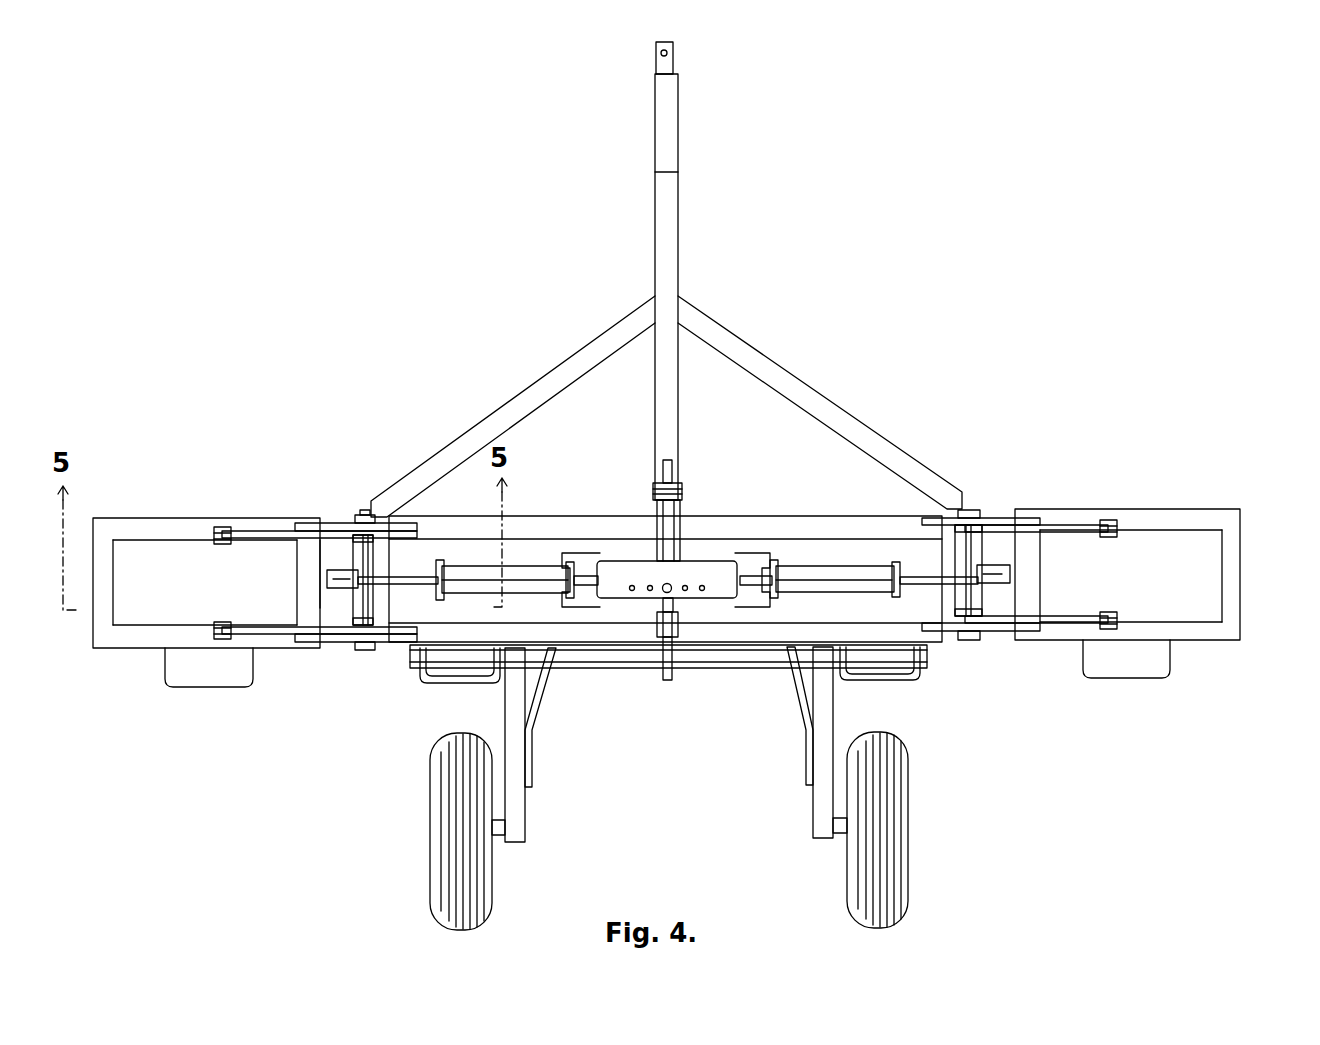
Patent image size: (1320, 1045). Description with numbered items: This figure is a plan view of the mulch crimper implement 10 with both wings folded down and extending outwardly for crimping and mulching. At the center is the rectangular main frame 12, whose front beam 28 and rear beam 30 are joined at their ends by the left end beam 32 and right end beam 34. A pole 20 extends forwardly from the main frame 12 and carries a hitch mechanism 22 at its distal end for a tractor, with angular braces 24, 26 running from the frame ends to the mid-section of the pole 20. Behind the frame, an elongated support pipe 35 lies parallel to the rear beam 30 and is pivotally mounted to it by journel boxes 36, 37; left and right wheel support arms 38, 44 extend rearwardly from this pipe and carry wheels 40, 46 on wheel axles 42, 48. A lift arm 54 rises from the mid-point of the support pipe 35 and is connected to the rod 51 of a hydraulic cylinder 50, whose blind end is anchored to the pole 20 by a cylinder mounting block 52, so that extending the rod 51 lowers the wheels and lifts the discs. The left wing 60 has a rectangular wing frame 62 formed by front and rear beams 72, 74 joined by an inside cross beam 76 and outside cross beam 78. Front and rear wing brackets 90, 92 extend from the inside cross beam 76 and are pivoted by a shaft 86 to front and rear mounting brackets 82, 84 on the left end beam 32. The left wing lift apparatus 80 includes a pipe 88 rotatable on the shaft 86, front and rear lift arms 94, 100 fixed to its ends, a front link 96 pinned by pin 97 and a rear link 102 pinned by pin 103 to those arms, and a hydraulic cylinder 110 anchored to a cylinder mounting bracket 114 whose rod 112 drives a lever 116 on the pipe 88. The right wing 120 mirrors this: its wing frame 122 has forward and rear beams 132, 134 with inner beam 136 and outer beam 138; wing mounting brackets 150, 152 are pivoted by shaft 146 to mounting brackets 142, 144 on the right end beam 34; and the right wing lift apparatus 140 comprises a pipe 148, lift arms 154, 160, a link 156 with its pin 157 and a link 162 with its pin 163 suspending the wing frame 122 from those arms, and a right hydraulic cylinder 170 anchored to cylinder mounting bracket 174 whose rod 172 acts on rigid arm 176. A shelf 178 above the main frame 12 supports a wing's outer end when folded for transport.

The mulch crimper implement 10 is at (841, 360).
The main frame 12 is at (757, 500).
The pole 20 is at (679, 208).
The hitch mechanism 22 is at (676, 50).
The angular brace 24 is at (604, 336).
The angular brace 26 is at (717, 324).
The front beam 28 is at (515, 513).
The rear beam 30 is at (753, 642).
The left end beam 32 is at (393, 557).
The right end beam 34 is at (940, 556).
The support pipe 35 is at (590, 670).
The journel box 36 is at (462, 684).
The journel box 37 is at (887, 674).
The left wheel support arm 38 is at (526, 804).
The wheel 40 is at (430, 812).
The wheel axle 42 is at (497, 836).
The right wheel support arm 44 is at (813, 808).
The wheel 46 is at (908, 812).
The wheel axle 48 is at (842, 835).
The hydraulic cylinder 50 is at (680, 540).
The rod 51 is at (684, 625).
The cylinder mounting block 52 is at (677, 472).
The lift arm 54 is at (650, 641).
The left wing 60 is at (197, 498).
The wing frame 62 is at (123, 652).
The front beam 72 is at (142, 517).
The rear beam 74 is at (147, 650).
The inside cross beam 76 is at (296, 583).
The outside cross beam 78 is at (93, 617).
The left wing lift apparatus 80 is at (342, 668).
The front mounting bracket 82 is at (403, 522).
The rear mounting bracket 84 is at (405, 651).
The shaft 86 is at (363, 515).
The pipe 88 is at (358, 605).
The front wing bracket 90 is at (331, 522).
The rear wing bracket 92 is at (333, 648).
The front lift arm 94 is at (255, 531).
The front link 96 is at (213, 538).
The pin 97 is at (222, 552).
The rear lift arm 100 is at (259, 643).
The rear link 102 is at (213, 624).
The pin 103 is at (221, 620).
The hydraulic cylinder 110 is at (507, 567).
The rod 112 is at (400, 590).
The cylinder mounting bracket 114 is at (560, 597).
The lever 116 is at (327, 574).
The right wing 120 is at (1157, 500).
The wing frame 122 is at (1222, 645).
The forward beam 132 is at (1205, 508).
The rear beam 134 is at (1202, 642).
The inner beam 136 is at (1042, 585).
The outer beam 138 is at (1243, 540).
The right wing lift apparatus 140 is at (997, 660).
The mounting bracket 142 is at (950, 516).
The mounting bracket 144 is at (940, 641).
The shaft 146 is at (968, 508).
The pipe 148 is at (893, 530).
The wing mounting bracket 150 is at (997, 517).
The wing mounting bracket 152 is at (990, 638).
The lift arm 154 is at (1077, 527).
The link 156 is at (1118, 533).
The nut 157 is at (1110, 538).
The lift arm 160 is at (1073, 624).
The link 162 is at (1120, 613).
The nut 163 is at (1108, 607).
The right hydraulic cylinder 170 is at (833, 568).
The rod 172 is at (923, 583).
The cylinder mounting bracket 174 is at (778, 607).
The rigid arm 176 is at (1010, 566).
The shelf 178 is at (630, 560).